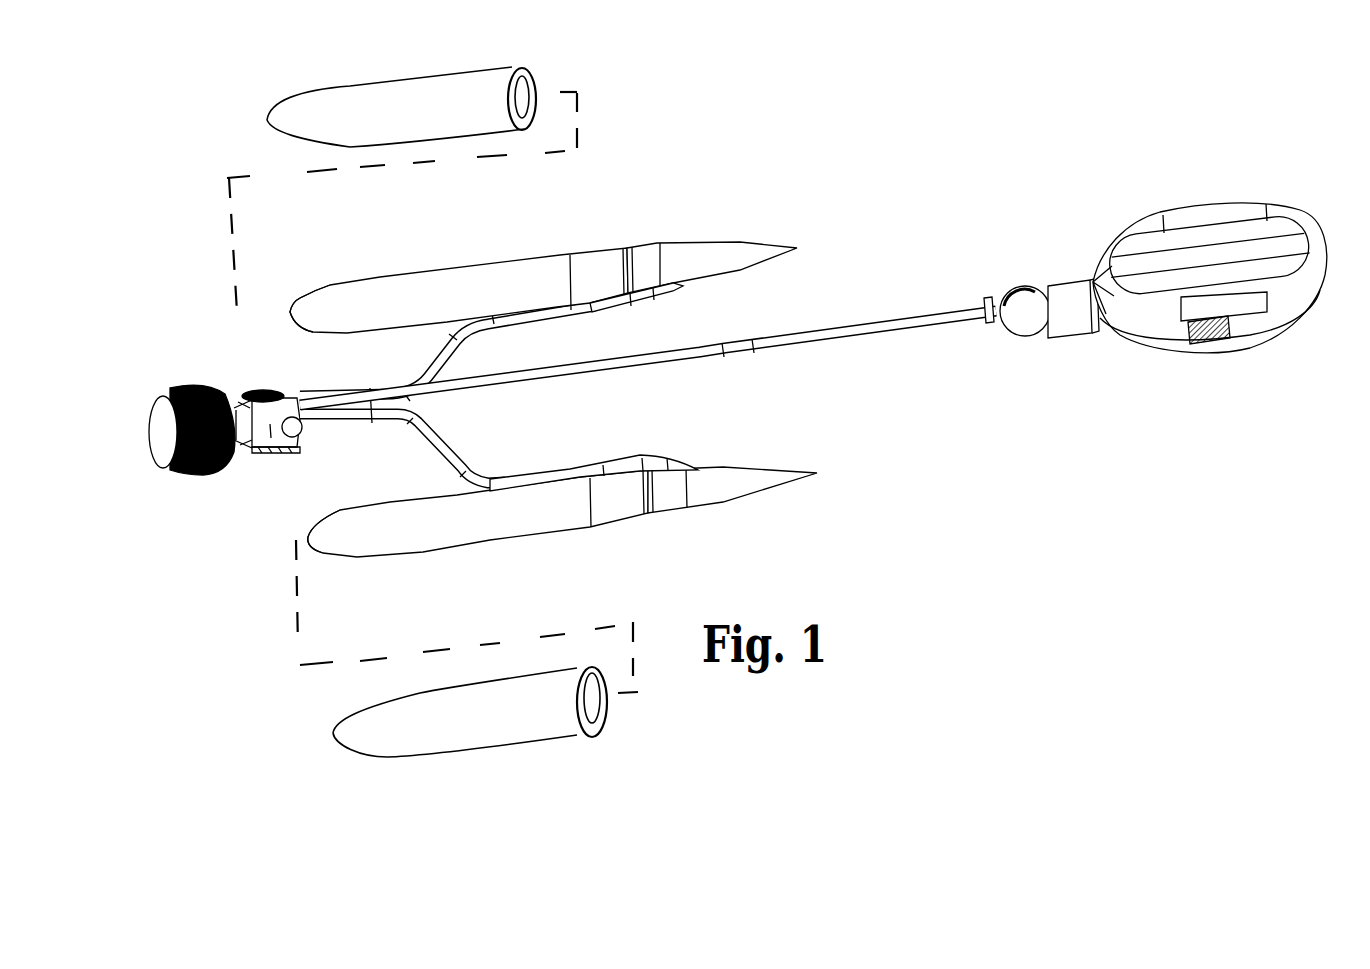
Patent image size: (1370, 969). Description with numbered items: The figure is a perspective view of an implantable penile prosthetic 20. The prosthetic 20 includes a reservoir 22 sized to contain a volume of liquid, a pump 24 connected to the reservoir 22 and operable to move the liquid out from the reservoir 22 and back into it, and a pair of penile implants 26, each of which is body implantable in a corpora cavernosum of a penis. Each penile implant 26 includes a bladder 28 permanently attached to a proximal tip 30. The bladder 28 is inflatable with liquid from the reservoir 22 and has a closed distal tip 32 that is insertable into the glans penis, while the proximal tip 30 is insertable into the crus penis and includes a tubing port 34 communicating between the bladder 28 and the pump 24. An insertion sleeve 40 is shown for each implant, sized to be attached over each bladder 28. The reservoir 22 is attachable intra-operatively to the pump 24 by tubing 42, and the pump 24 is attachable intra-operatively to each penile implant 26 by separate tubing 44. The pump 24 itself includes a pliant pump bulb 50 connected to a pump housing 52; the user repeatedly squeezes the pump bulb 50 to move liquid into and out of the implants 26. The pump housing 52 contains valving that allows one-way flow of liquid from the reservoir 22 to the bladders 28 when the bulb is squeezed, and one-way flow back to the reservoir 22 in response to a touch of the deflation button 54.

The penile prosthetic 20 is at (877, 142).
The reservoir 22 is at (1265, 232).
The pump 24 is at (261, 422).
The penile implant 26 is at (536, 395).
The bladder 28 is at (428, 262).
The proximal tip 30 is at (715, 255).
The closed distal tip 32 is at (291, 308).
The tubing port 34 is at (668, 292).
The insertion sleeve 40 is at (410, 75).
The tubing 42 is at (585, 378).
The separate tubing 44 is at (462, 340).
The pump bulb 50 is at (160, 425).
The pump housing 52 is at (272, 455).
The deflation button 54 is at (266, 391).